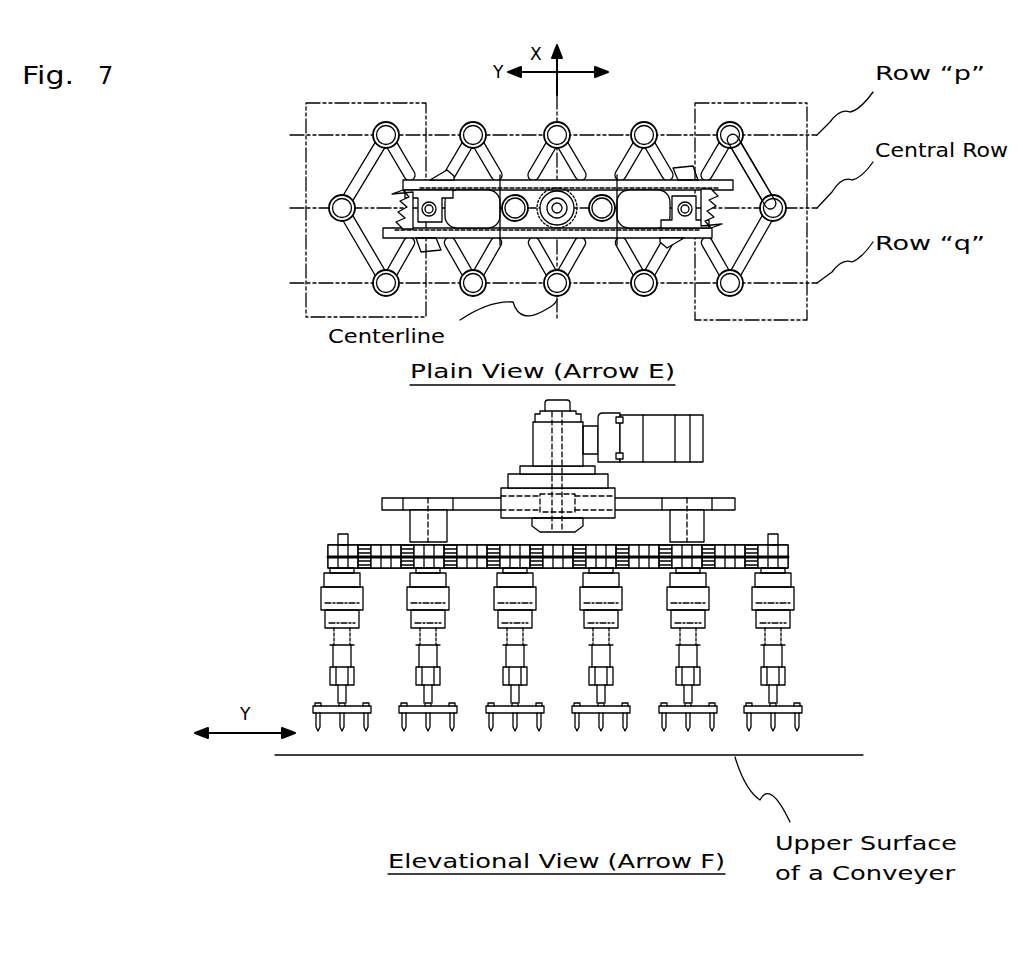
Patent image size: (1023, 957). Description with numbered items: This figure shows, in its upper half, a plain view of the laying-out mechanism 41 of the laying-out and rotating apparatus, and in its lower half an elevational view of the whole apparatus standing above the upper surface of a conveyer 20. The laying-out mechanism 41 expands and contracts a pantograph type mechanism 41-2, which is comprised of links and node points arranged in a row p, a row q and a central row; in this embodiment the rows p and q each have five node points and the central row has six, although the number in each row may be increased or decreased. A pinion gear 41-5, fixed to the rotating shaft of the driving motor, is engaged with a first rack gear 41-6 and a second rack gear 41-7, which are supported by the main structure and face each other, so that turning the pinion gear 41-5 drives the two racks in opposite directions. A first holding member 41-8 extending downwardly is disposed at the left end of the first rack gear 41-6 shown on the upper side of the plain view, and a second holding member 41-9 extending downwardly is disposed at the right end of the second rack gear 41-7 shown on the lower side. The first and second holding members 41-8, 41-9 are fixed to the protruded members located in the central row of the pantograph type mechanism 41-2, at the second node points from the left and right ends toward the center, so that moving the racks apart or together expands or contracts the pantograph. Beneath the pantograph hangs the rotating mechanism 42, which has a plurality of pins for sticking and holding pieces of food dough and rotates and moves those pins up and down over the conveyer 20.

The laying-out mechanism 41 is at (272, 238).
The pantograph type mechanism 41-2 is at (744, 158).
The pinion gear 41-5 is at (560, 192).
The first rack gear 41-6 is at (470, 186).
The second rack gear 41-7 is at (637, 235).
The first holding member 41-8 is at (403, 200).
The second holding member 41-9 is at (690, 200).
The rotating mechanism 42 is at (858, 620).
The conveyor 20 is at (362, 755).